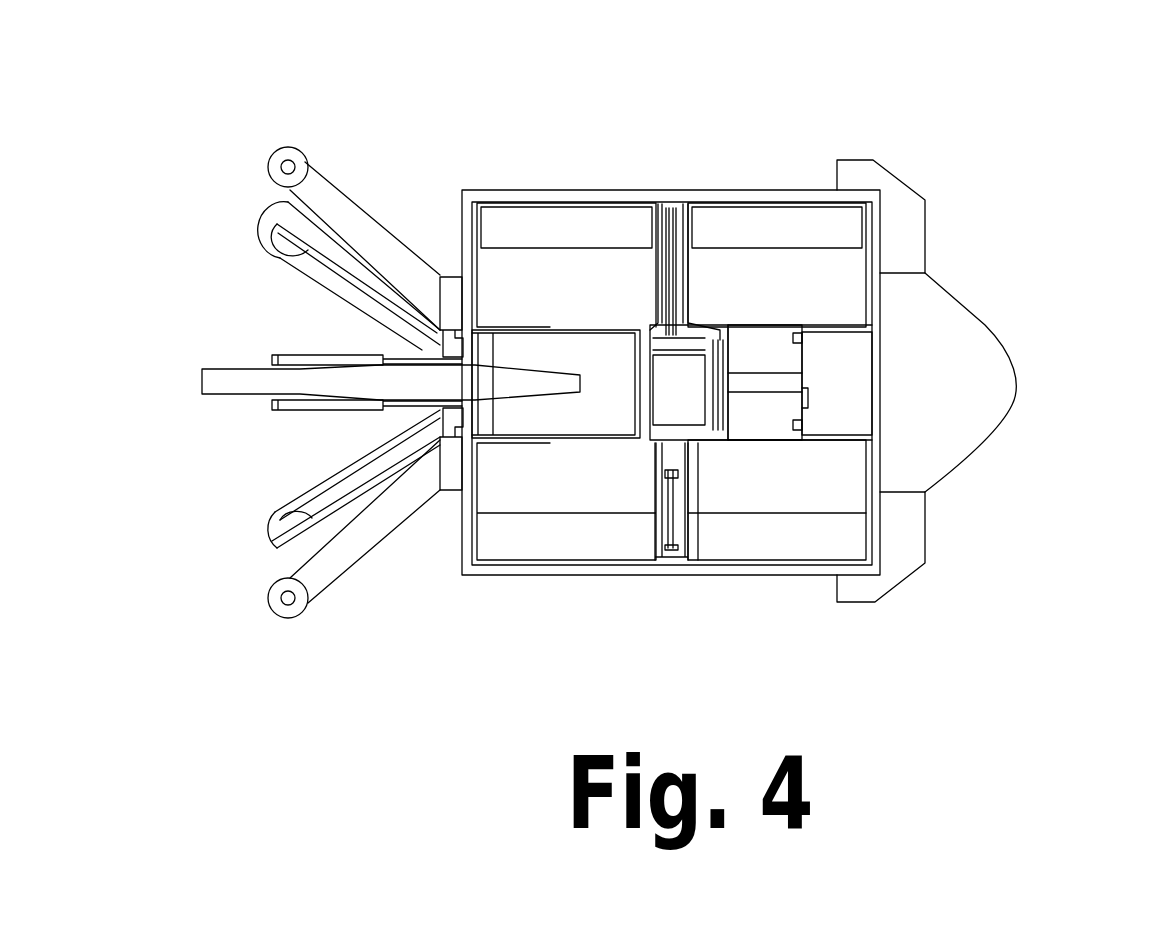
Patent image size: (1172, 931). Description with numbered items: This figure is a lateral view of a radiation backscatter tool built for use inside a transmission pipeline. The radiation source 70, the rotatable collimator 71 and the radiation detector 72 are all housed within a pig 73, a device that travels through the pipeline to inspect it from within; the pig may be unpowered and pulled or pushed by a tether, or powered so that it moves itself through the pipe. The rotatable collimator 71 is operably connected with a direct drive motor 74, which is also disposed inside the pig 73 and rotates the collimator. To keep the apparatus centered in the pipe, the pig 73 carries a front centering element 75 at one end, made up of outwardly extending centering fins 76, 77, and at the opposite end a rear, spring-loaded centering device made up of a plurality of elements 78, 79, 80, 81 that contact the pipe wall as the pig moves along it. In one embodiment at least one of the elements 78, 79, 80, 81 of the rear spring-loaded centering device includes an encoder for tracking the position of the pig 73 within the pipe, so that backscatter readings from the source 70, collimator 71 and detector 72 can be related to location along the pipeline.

The radiation source 70 is at (607, 328).
The rotatable collimator 71 is at (658, 514).
The radiation detector 72 is at (747, 513).
The pig 73 is at (783, 190).
The direct drive motor 74 is at (860, 380).
The front centering element 75 is at (968, 307).
The centering fin 76 is at (913, 183).
The centering fin 77 is at (912, 573).
The element of rear spring-loaded centering device 78 is at (308, 160).
The element of rear spring-loaded centering device 79 is at (270, 202).
The element of rear spring-loaded centering device 80 is at (320, 592).
The element of rear spring-loaded centering device 81 is at (287, 512).